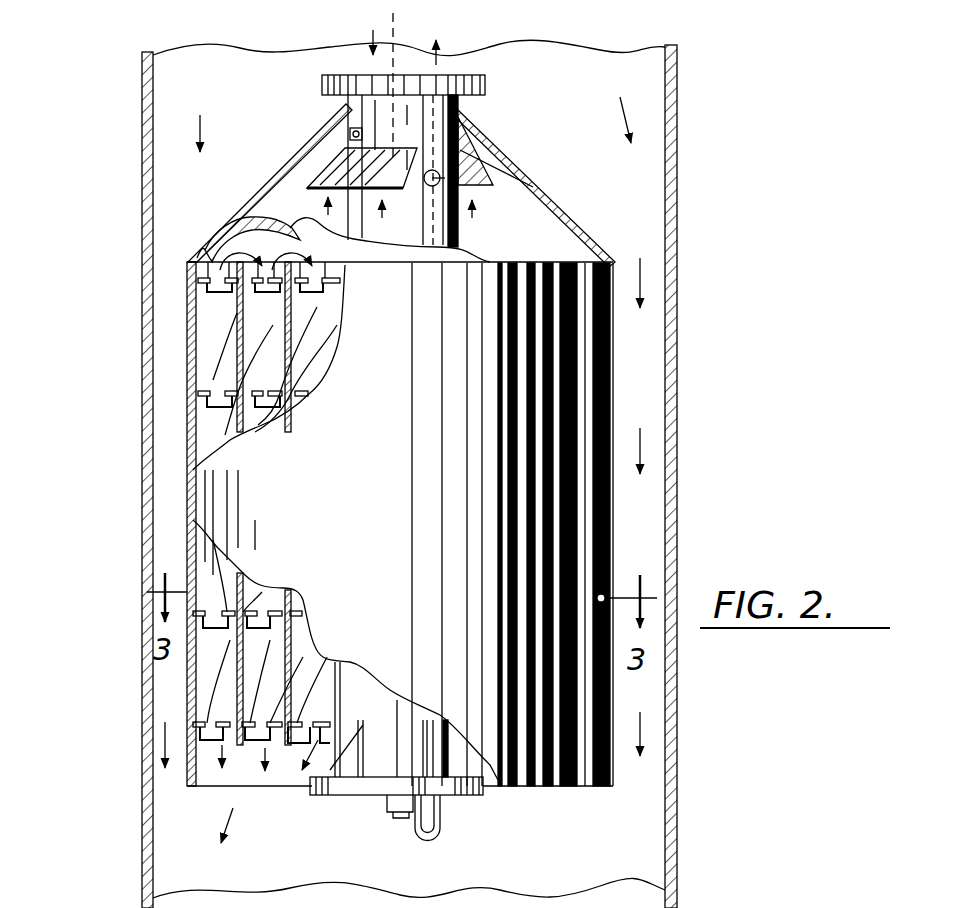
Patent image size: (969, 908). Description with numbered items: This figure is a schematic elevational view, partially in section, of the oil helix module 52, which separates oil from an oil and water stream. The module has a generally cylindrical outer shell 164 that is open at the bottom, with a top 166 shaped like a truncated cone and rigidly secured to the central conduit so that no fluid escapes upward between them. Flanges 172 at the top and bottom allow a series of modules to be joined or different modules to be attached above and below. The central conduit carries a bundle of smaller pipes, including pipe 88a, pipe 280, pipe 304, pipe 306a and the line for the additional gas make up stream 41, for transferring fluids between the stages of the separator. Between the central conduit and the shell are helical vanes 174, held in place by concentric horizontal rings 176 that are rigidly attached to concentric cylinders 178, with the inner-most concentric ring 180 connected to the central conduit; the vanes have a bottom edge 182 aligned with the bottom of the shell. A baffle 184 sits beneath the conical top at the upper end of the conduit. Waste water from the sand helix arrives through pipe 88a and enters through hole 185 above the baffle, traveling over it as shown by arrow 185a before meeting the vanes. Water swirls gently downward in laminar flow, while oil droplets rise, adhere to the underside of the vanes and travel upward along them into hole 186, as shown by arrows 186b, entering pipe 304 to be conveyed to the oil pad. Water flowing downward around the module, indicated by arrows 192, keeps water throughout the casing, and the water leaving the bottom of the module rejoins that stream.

The additional gas make up stream 41 is at (390, 808).
The oil helix module 52 is at (636, 380).
The pipe 88a is at (398, 14).
The outer shell 164 is at (533, 788).
The top 166 is at (533, 187).
The flanges 172 is at (323, 82).
The helical vanes 174 is at (218, 197).
The concentric horizontal rings 176 is at (198, 383).
The concentric cylinders 178 is at (275, 652).
The inner-most concentric ring 180 is at (322, 742).
The bottom edge 182 is at (243, 789).
The baffle 184 is at (441, 179).
The hole 185 is at (350, 135).
The arrow 185a is at (343, 146).
The hole 186 is at (476, 168).
The arrows 186b is at (270, 190).
The arrows 192 is at (200, 128).
The pipe 280 is at (415, 822).
The pipe 304 is at (468, 110).
The pipe 306a is at (440, 810).